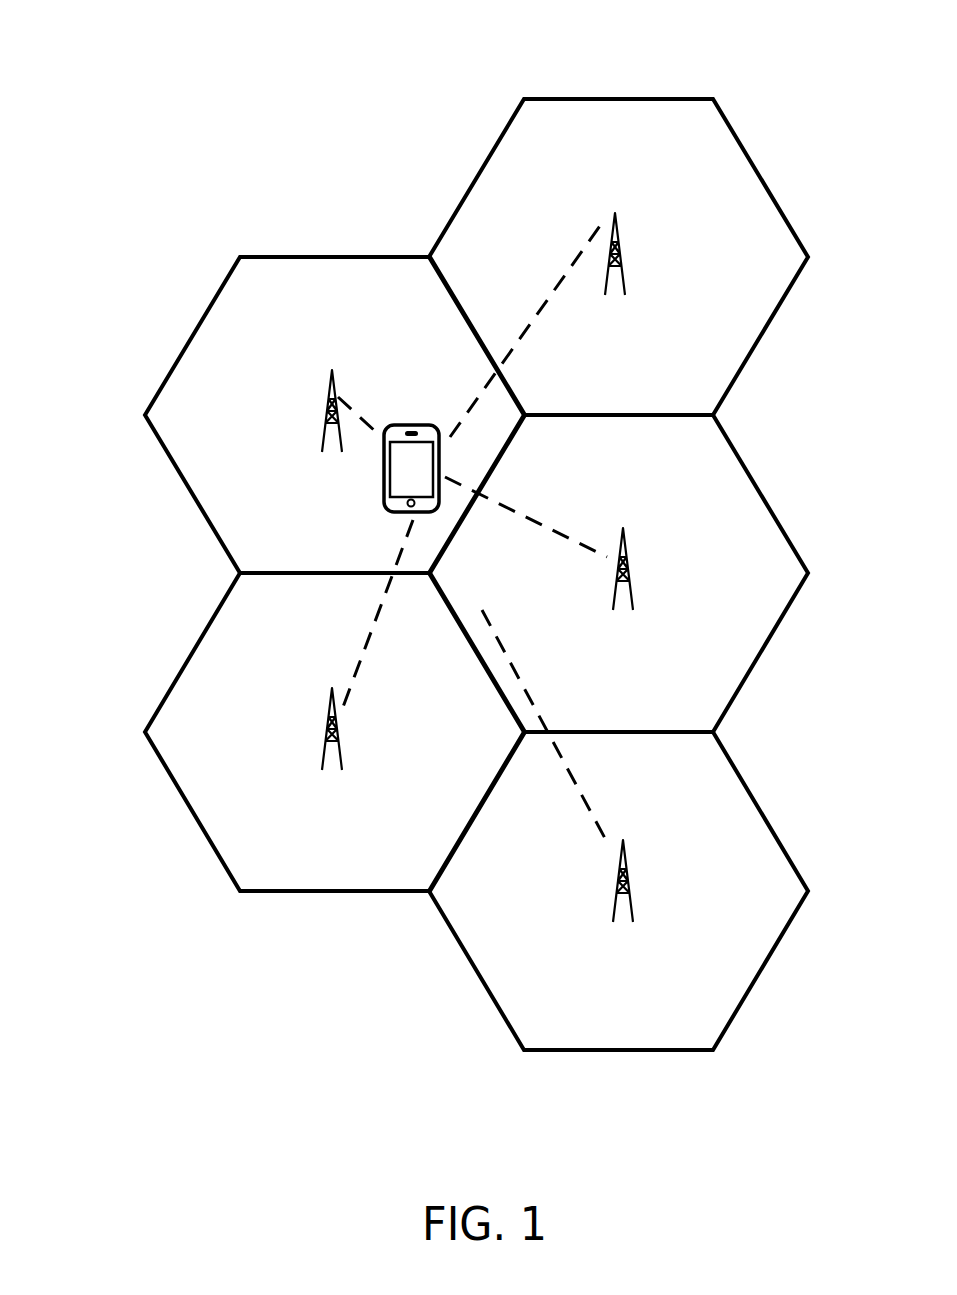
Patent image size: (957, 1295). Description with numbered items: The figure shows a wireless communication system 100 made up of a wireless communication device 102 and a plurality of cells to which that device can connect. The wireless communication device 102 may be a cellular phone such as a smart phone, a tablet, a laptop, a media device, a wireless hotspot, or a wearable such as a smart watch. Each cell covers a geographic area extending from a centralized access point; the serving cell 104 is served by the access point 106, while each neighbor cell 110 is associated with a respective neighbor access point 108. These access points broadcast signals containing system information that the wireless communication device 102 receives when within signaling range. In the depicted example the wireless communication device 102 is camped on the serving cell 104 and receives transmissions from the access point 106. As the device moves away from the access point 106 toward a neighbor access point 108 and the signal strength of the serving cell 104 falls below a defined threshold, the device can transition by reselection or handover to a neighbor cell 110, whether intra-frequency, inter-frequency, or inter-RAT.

The wireless communication system 100 is at (136, 133).
The wireless communication device 102 is at (385, 468).
The serving cell 104 is at (220, 288).
The access point 106 is at (340, 388).
The neighbor access point 108 is at (277, 773).
The neighbor cell 110 is at (163, 632).